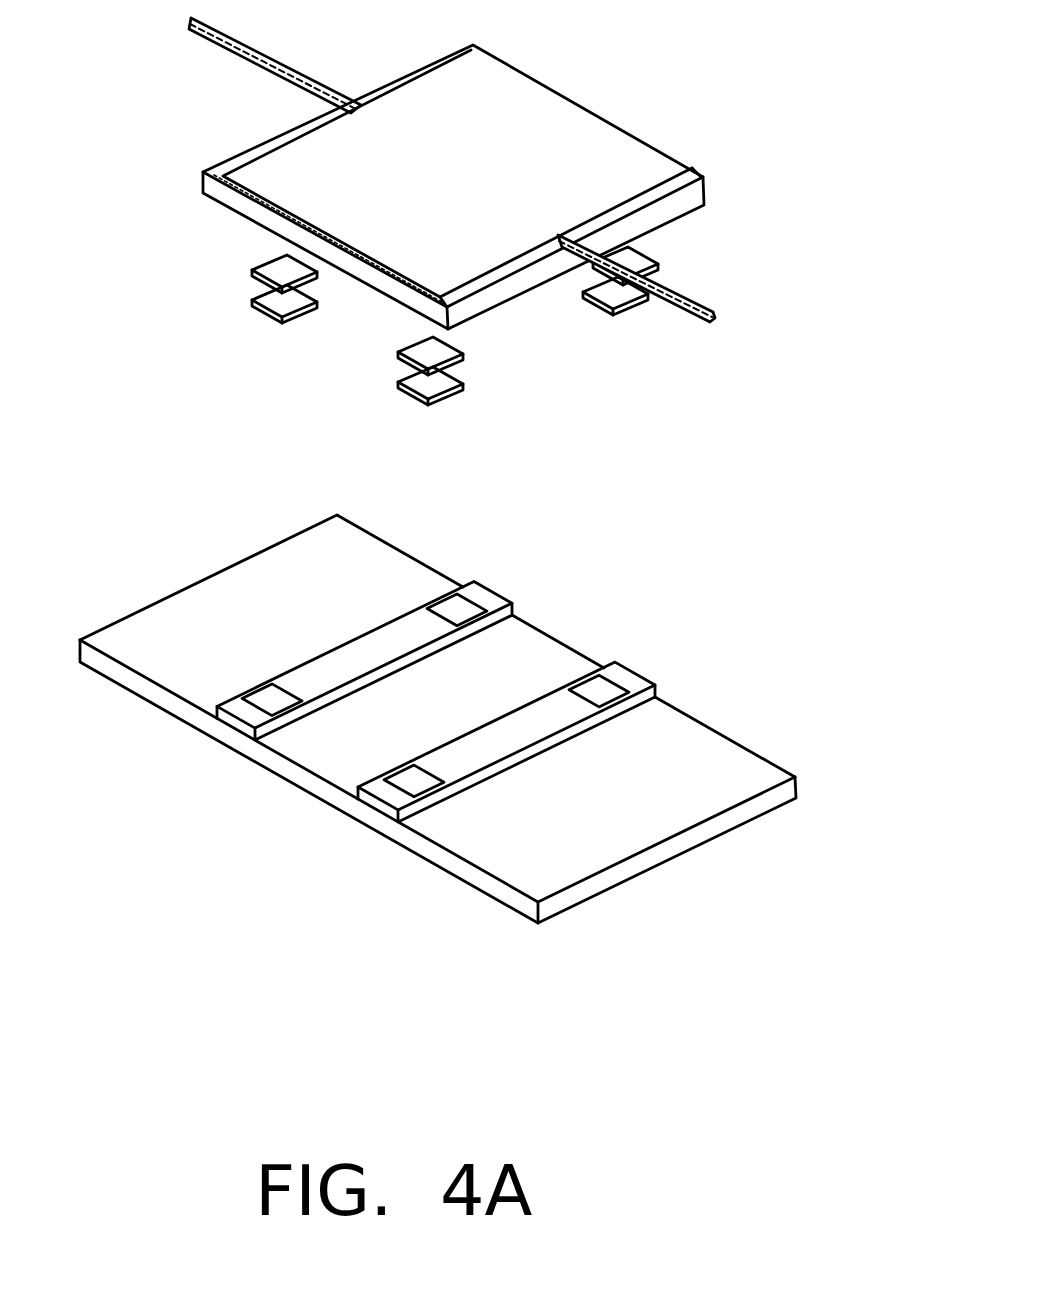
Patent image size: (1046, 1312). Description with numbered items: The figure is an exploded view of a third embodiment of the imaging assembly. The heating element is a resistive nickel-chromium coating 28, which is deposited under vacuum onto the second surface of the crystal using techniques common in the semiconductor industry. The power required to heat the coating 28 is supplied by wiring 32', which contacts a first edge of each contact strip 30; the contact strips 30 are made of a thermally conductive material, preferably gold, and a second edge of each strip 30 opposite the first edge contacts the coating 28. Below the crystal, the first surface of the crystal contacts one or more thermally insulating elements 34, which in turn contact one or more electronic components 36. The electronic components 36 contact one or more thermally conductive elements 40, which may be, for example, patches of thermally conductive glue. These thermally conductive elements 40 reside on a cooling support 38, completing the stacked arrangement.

The resistive nickel-chromium coating 28 is at (290, 165).
The contact strip 30 is at (475, 47).
The wiring 32' is at (527, 170).
The thermally insulating element 34 is at (437, 352).
The electronic component 36 is at (412, 396).
The cooling support 38 is at (462, 870).
The thermally conductive element 40 is at (268, 704).